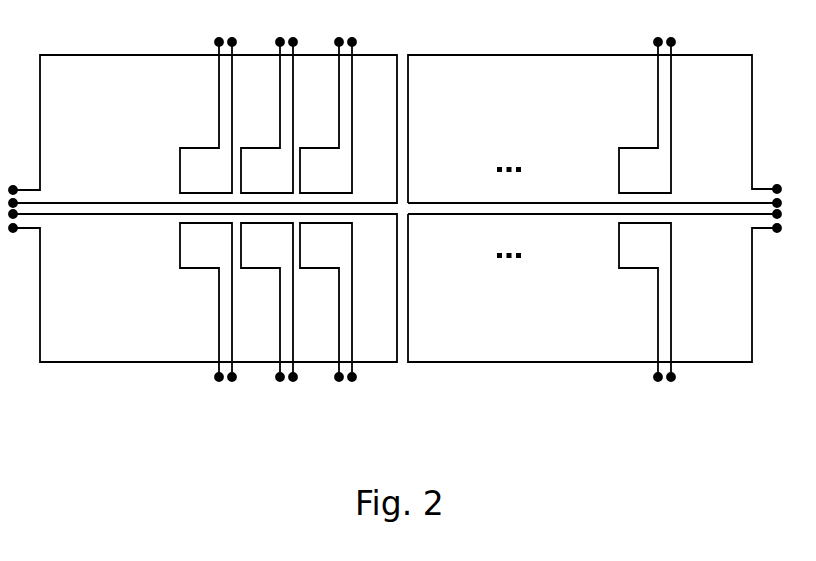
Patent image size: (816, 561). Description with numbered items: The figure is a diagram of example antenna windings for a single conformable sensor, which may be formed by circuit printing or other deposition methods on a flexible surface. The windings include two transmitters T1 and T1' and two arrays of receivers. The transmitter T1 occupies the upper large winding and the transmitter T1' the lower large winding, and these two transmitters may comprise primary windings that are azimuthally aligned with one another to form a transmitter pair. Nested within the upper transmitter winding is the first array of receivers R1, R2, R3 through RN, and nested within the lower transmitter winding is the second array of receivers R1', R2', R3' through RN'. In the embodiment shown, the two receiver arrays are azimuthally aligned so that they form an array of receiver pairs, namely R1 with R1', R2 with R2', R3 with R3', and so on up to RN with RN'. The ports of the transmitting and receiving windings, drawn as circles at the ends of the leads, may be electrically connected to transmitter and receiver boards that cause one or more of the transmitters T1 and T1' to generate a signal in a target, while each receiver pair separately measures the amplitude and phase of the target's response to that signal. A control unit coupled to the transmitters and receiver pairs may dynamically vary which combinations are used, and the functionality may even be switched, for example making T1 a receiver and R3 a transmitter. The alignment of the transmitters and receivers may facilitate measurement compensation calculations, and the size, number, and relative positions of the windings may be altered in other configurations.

The transmitter T1 is at (203, 131).
The transmitter T1' is at (203, 286).
The receiver R1 is at (208, 115).
The receiver R1' is at (208, 302).
The receiver R2 is at (269, 115).
The receiver R2' is at (269, 302).
The receiver R3 is at (328, 115).
The receiver R3' is at (328, 302).
The receiver RN is at (647, 115).
The receiver RN' is at (647, 302).